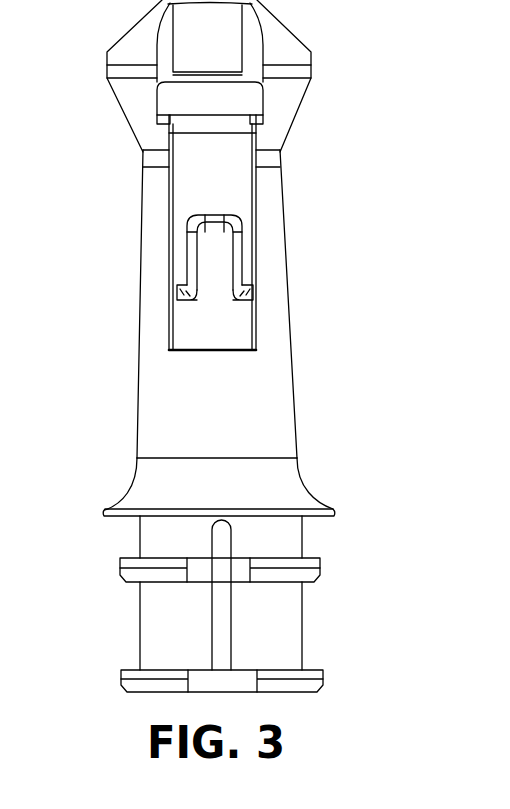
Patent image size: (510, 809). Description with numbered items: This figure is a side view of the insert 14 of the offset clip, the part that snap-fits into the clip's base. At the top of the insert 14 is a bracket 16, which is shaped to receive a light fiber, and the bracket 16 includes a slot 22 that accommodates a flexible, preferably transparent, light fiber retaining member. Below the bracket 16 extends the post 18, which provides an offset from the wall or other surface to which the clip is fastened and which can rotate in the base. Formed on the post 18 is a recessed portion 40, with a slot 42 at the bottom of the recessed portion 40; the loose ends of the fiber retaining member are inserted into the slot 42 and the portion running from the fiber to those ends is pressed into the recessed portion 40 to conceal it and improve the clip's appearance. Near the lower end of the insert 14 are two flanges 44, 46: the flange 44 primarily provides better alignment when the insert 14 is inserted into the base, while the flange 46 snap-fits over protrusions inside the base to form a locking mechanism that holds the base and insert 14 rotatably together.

The insert 14 is at (280, 457).
The bracket 16 is at (133, 50).
The post 18 is at (155, 313).
The slot 22 is at (190, 104).
The recessed portion 40 is at (215, 174).
The slot 42 is at (223, 333).
The flange 44 is at (310, 567).
The flange 46 is at (315, 682).